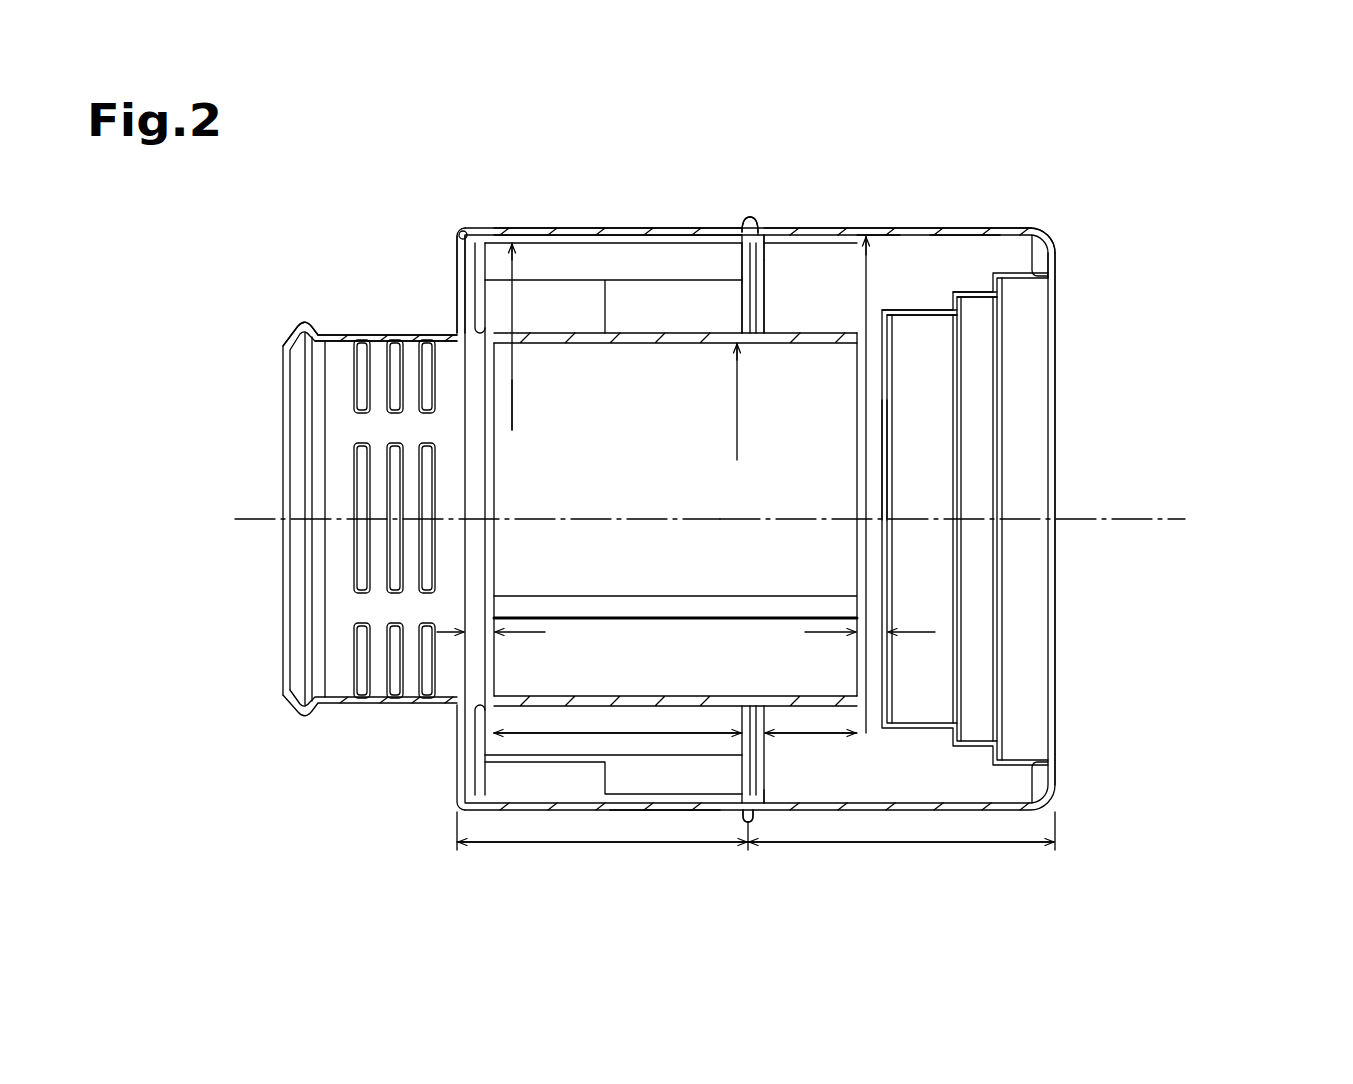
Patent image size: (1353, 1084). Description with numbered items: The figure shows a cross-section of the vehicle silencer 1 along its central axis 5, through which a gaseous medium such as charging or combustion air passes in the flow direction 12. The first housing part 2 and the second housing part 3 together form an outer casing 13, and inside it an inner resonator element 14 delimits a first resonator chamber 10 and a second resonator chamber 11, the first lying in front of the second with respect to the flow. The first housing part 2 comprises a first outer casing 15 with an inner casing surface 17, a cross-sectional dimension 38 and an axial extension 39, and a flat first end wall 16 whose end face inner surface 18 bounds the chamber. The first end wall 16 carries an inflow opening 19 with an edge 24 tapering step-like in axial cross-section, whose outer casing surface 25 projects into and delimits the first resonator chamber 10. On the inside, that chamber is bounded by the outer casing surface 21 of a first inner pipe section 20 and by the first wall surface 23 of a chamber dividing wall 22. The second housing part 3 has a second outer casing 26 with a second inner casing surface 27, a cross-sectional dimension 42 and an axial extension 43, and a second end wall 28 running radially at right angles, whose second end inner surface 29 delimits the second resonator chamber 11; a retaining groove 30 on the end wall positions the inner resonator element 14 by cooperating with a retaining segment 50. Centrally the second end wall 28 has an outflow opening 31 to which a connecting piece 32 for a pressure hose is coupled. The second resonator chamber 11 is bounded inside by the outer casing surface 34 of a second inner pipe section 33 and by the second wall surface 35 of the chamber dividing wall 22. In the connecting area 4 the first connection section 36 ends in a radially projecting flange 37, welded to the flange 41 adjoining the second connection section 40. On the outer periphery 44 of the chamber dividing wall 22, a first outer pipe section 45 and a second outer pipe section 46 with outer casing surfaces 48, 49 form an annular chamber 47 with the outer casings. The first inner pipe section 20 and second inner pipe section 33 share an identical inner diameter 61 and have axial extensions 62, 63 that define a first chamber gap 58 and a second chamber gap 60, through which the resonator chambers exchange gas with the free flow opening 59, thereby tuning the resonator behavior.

The vehicle silencer 1 is at (1225, 138).
The first housing part 2 is at (932, 228).
The second housing part 3 is at (604, 232).
The connecting area 4 is at (749, 190).
The central axis 5 is at (262, 519).
The first resonator chamber 10 is at (970, 236).
The second resonator chamber 11 is at (557, 293).
The flow direction 12 is at (1130, 519).
The outer casing 13 is at (797, 280).
The inner resonator element 14 is at (872, 189).
The first outer casing 15 is at (1000, 232).
The first end wall 16 is at (1077, 273).
The inner casing surface 17 is at (1055, 236).
The end face inner surface 18 is at (1056, 243).
The inflow opening 19 is at (1140, 432).
The first inner pipe section 20 is at (800, 343).
The outer casing surface 21 is at (840, 330).
The chamber dividing wall 22 is at (747, 258).
The first wall surface 23 is at (848, 233).
The edge 24 is at (977, 306).
The outer casing surface 25 is at (910, 305).
The second outer casing 26 is at (634, 231).
The second inner casing surface 27 is at (686, 238).
The second end wall 28 is at (487, 268).
The second end inner surface 29 is at (497, 232).
The retaining groove 30 is at (455, 225).
The outflow opening 31 is at (262, 465).
The connecting piece 32 is at (357, 276).
The second inner pipe section 33 is at (600, 345).
The outer casing surface 34 is at (505, 325).
The second wall surface 35 is at (740, 300).
The first connection section 36 is at (768, 213).
The flange 37 is at (760, 200).
The cross-sectional dimension 38 is at (868, 400).
The axial extension 39 is at (1020, 838).
The second connection section 40 is at (722, 211).
The flange 41 is at (737, 209).
The cross-sectional dimension 42 is at (510, 428).
The axial extension 43 is at (520, 838).
The outer periphery 44 is at (786, 264).
The first outer pipe section 45 is at (762, 808).
The second outer pipe section 46 is at (703, 812).
The annular chamber 47 is at (668, 812).
The outer casing surface 48 is at (766, 815).
The outer casing surface 49 is at (632, 812).
The retaining segment 50 is at (462, 220).
The first chamber gap 58 is at (915, 630).
The free flow opening 59 is at (848, 566).
The second chamber gap 60 is at (445, 628).
The inner diameter 61 is at (897, 468).
The axial extension 62 is at (822, 730).
The axial extension 63 is at (553, 727).